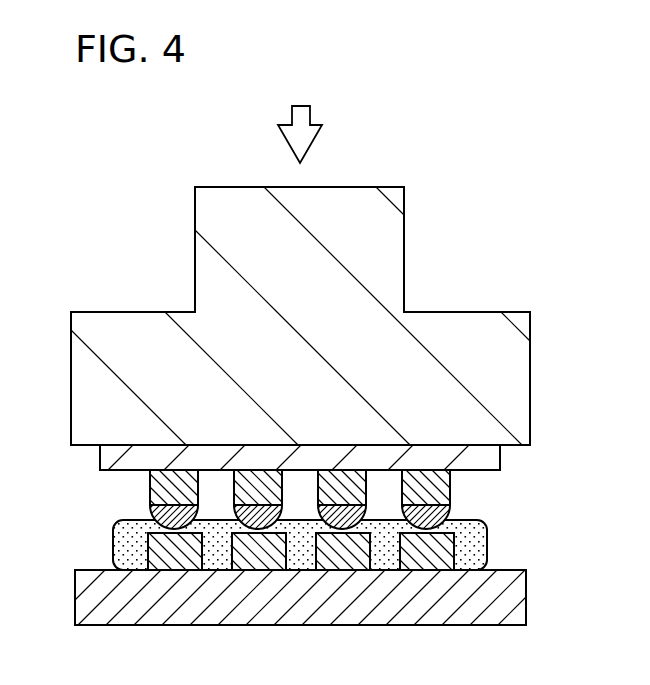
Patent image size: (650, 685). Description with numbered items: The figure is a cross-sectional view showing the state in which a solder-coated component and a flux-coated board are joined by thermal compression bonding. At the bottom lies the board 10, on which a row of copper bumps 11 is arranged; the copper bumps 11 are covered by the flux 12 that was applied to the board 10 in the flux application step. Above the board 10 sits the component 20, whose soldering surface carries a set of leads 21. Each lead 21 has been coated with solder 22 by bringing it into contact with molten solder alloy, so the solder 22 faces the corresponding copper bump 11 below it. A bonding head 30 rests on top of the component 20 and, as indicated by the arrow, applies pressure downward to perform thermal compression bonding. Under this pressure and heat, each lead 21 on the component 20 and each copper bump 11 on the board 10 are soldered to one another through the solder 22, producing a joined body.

The board 10 is at (515, 597).
The copper bump 11 is at (160, 558).
The flux 12 is at (478, 548).
The component 20 is at (502, 458).
The lead 21 is at (155, 493).
The solder 22 is at (158, 511).
The bonding head 30 is at (475, 312).